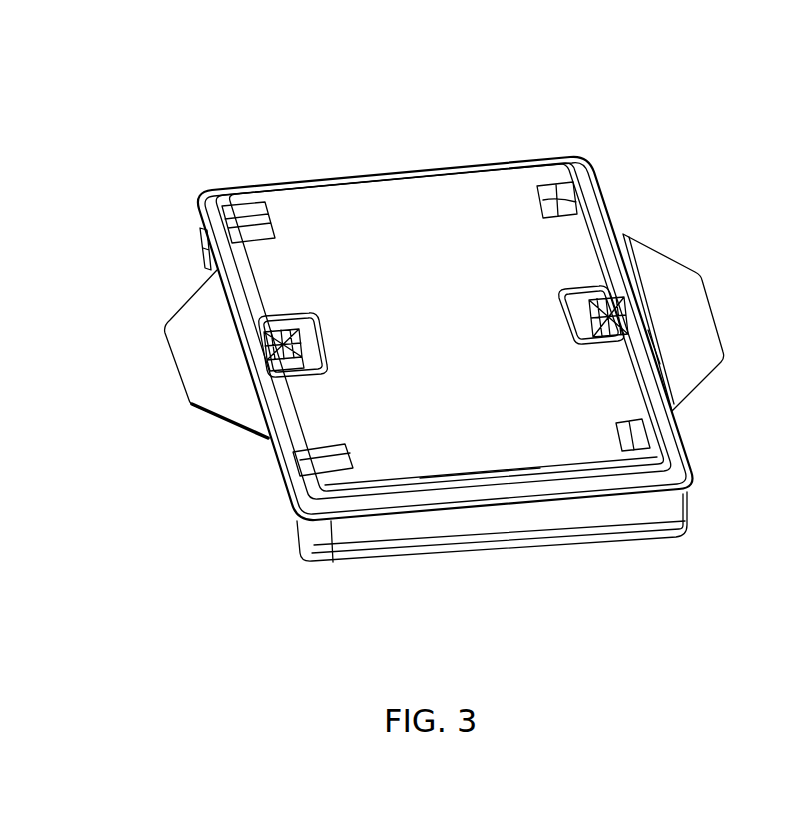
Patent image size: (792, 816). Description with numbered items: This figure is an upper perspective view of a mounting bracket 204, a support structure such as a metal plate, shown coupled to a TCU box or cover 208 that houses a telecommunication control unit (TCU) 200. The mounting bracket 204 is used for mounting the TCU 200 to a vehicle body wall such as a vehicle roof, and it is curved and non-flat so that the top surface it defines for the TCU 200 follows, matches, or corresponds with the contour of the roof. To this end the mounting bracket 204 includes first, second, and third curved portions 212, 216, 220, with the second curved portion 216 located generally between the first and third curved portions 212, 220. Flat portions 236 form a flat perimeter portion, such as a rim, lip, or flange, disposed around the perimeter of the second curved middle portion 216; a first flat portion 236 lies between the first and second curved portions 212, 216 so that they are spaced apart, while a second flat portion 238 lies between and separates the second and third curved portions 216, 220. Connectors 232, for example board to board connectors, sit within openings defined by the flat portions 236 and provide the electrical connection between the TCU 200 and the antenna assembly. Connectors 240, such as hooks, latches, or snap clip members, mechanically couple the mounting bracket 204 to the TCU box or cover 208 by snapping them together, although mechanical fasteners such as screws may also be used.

The telecommunication control unit (TCU) 200 is at (224, 128).
The mounting bracket 204 is at (522, 183).
The TCU box or cover 208 is at (350, 545).
The first curved portion 212 is at (213, 395).
The second curved portion 216 is at (481, 444).
The third curved portion 220 is at (681, 290).
The connectors 232 is at (592, 306).
The flat portions 236 is at (250, 346).
The second flat portion 238 is at (657, 344).
The connectors (hooks) 240 is at (642, 440).